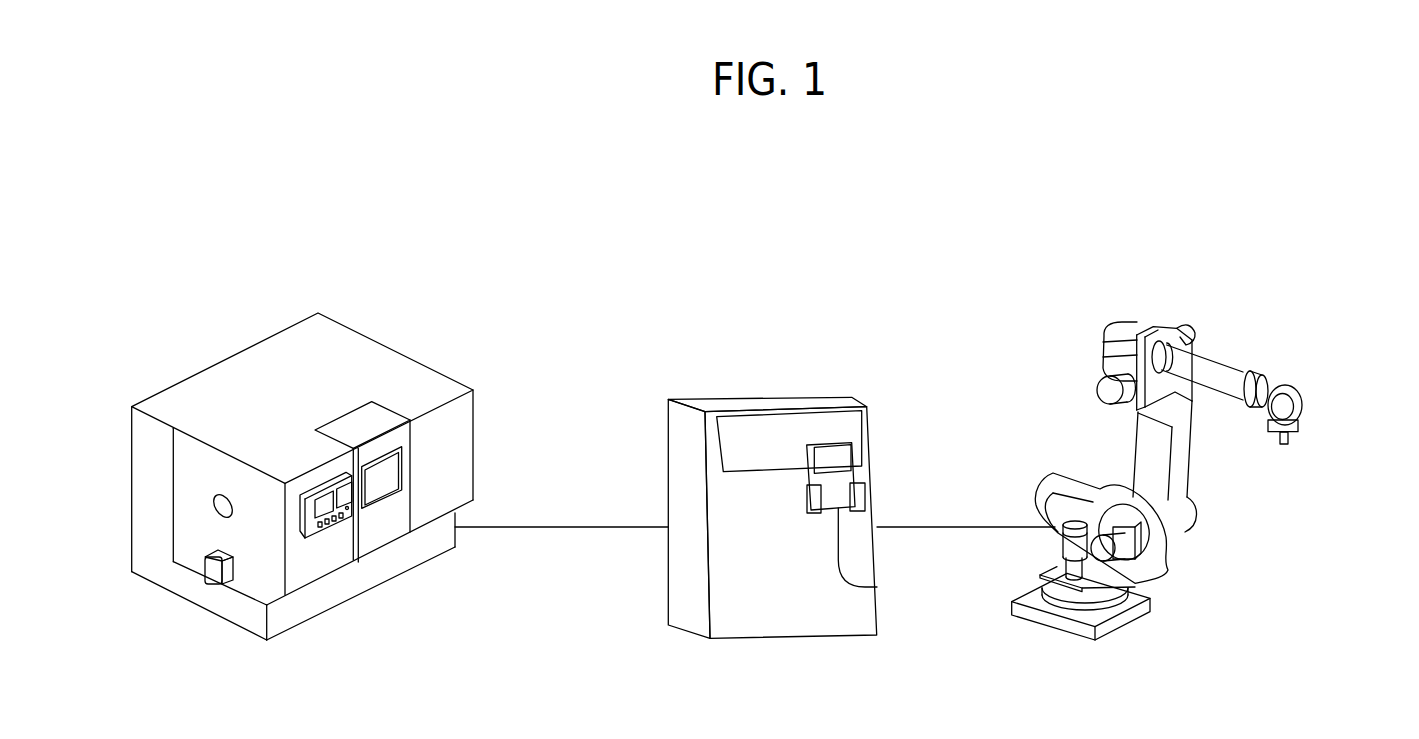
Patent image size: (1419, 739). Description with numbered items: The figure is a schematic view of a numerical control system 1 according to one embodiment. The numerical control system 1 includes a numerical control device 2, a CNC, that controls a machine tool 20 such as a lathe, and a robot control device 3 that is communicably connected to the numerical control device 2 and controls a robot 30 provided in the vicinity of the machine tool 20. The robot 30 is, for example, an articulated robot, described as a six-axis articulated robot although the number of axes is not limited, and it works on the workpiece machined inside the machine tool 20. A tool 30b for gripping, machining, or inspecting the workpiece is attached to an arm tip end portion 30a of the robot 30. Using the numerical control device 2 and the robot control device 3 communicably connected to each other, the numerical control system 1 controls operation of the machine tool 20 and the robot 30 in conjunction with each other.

The numerical control system 1 is at (1114, 197).
The numerical control device 2 is at (330, 526).
The robot control device 3 is at (822, 398).
The machine tool 20 is at (402, 373).
The robot 30 is at (1183, 330).
The arm tip end portion 30a is at (1288, 437).
The tool 30b is at (1290, 450).